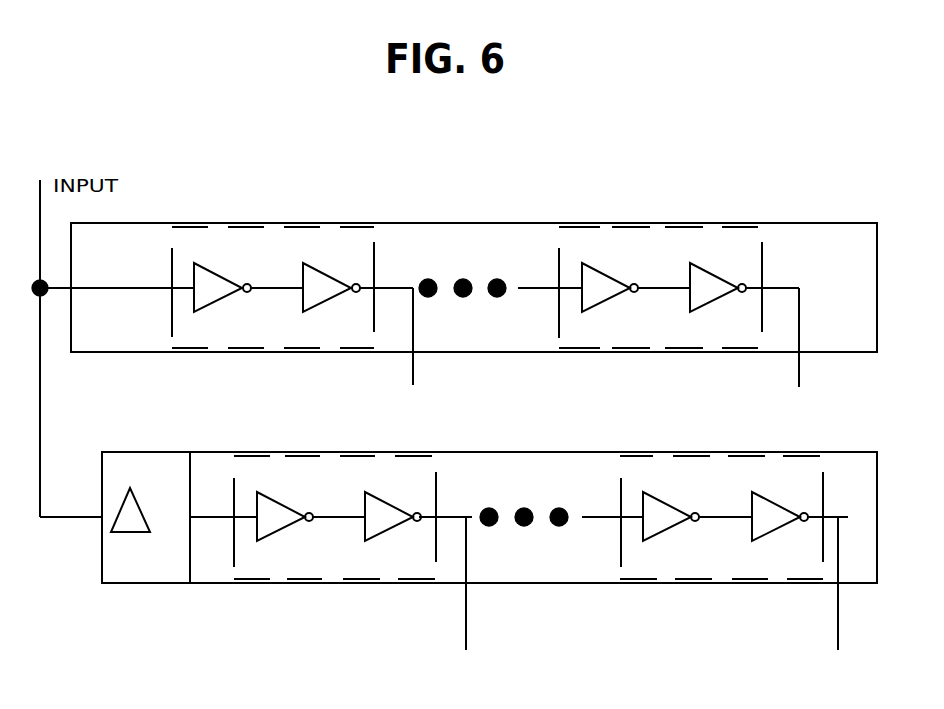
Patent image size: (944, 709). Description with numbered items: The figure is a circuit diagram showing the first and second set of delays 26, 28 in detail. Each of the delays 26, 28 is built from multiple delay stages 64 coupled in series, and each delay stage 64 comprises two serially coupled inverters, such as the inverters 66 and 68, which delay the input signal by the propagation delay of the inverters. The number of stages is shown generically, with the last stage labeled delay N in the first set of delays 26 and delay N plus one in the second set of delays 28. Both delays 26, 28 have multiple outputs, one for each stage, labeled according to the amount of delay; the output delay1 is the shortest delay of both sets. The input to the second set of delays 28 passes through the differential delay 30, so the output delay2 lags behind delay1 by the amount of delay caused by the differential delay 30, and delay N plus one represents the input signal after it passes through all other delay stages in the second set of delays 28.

The first set of delays 26 is at (428, 222).
The second set of delays 28 is at (524, 452).
The differential delay 30 is at (143, 583).
The delay stage 64 is at (247, 238).
The inverter 66 is at (213, 297).
The inverter 68 is at (317, 303).